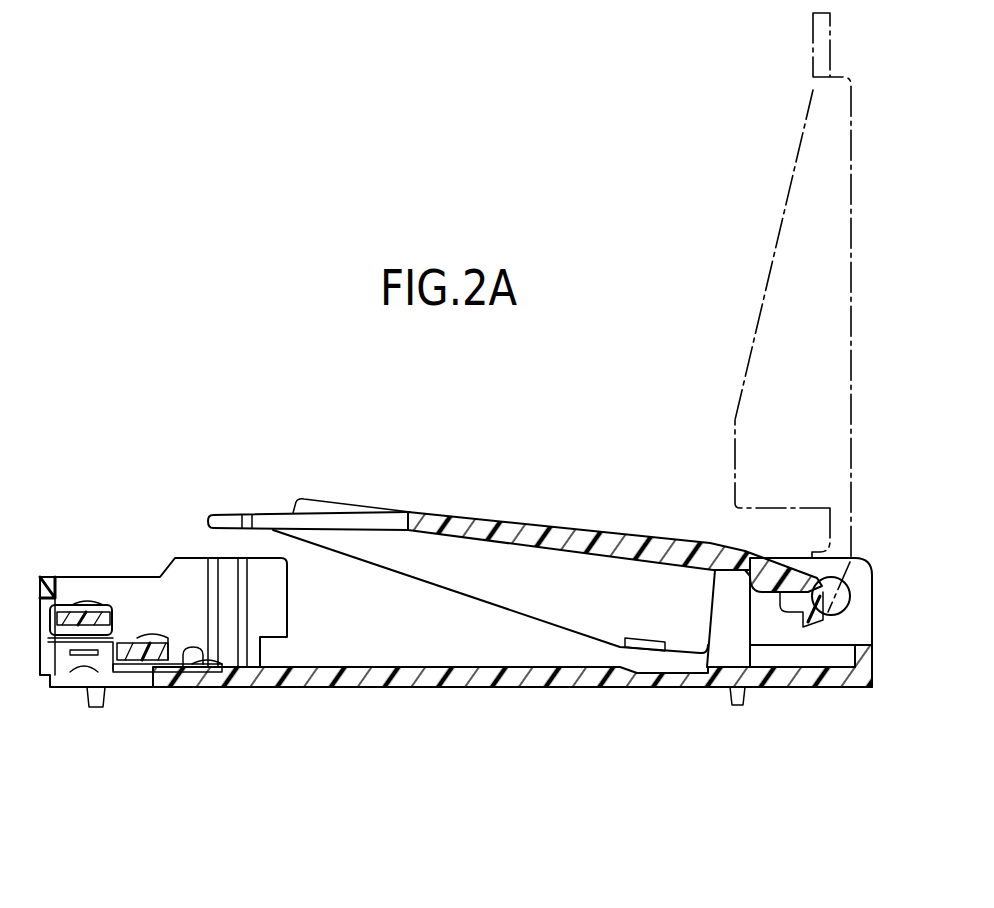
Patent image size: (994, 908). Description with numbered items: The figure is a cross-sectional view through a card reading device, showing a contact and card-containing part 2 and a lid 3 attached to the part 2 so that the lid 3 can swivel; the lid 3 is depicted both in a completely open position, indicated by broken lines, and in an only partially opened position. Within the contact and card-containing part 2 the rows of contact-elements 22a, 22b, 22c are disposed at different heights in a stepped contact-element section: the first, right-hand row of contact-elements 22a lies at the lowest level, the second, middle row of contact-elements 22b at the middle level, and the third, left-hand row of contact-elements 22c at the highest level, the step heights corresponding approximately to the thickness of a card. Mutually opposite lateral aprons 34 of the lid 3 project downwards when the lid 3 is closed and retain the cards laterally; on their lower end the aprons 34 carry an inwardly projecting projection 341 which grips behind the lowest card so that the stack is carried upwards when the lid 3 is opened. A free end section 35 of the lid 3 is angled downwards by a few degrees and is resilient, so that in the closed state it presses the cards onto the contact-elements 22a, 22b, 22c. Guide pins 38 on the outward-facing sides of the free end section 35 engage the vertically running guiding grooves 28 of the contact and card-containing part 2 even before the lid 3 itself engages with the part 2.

The contact and card-containing part 2 is at (537, 680).
The lid 3 is at (828, 93).
The contact-elements 22a is at (182, 653).
The contact-elements 22b is at (154, 632).
The contact-elements 22c is at (90, 605).
The guiding grooves 28 is at (227, 575).
The lateral aprons 34 is at (778, 293).
The projection 341 is at (650, 640).
The free end section 35 is at (280, 520).
The guide pins 38 is at (235, 521).